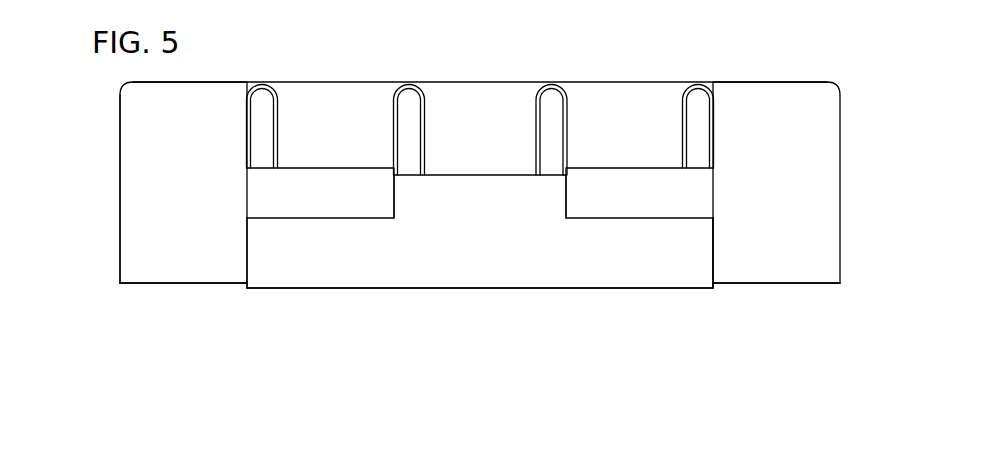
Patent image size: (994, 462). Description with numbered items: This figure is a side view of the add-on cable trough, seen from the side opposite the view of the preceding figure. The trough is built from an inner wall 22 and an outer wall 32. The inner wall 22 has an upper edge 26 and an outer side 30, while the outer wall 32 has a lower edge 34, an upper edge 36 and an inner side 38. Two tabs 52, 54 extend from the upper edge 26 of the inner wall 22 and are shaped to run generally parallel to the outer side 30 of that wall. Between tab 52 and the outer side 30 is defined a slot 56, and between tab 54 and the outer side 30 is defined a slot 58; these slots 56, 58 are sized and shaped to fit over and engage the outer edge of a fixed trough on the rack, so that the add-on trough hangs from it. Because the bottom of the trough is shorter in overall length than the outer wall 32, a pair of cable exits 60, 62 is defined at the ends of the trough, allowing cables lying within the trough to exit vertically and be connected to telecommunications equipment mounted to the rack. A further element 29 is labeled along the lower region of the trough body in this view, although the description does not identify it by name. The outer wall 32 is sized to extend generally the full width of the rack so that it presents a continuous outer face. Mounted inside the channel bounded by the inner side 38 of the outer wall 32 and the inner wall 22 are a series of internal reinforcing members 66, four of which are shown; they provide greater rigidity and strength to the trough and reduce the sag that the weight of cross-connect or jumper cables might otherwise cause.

The inner wall 22 is at (695, 275).
The upper edge 26 is at (505, 173).
The bottom surface 29 is at (548, 289).
The outer side 30 is at (468, 252).
The outer wall 32 is at (120, 193).
The lower edge 34 is at (812, 285).
The upper edge 36 is at (494, 80).
The inner side 38 is at (175, 187).
The tab 52 is at (626, 209).
The tab 54 is at (301, 209).
The slot 56 is at (551, 201).
The slot 58 is at (409, 201).
The cable exit 60 is at (194, 296).
The cable exit 62 is at (780, 298).
The reinforcing members 66 is at (262, 92).